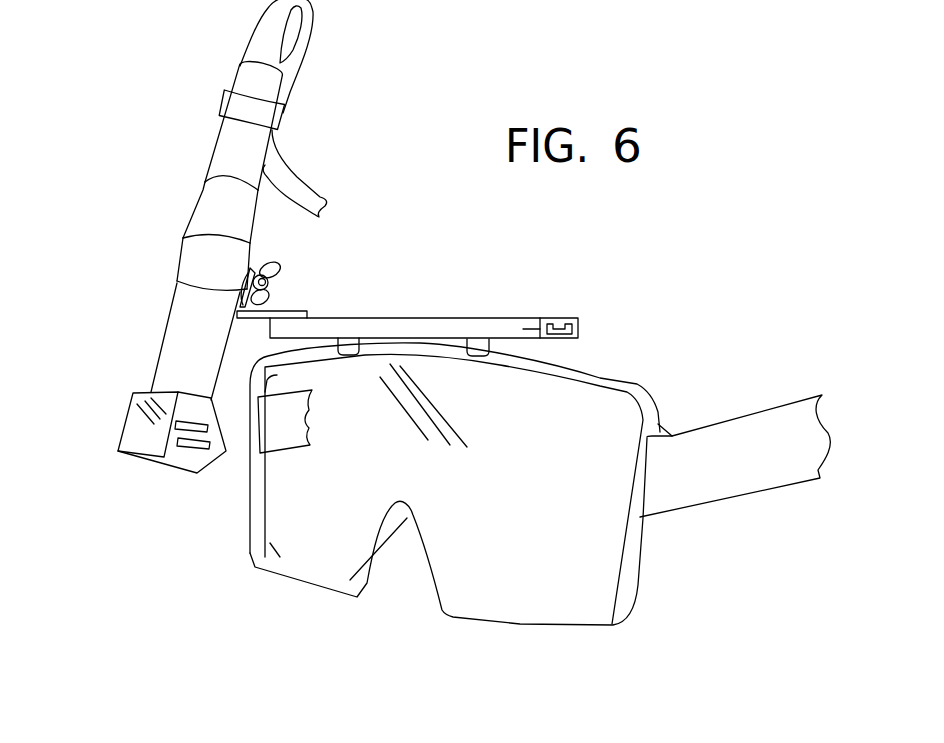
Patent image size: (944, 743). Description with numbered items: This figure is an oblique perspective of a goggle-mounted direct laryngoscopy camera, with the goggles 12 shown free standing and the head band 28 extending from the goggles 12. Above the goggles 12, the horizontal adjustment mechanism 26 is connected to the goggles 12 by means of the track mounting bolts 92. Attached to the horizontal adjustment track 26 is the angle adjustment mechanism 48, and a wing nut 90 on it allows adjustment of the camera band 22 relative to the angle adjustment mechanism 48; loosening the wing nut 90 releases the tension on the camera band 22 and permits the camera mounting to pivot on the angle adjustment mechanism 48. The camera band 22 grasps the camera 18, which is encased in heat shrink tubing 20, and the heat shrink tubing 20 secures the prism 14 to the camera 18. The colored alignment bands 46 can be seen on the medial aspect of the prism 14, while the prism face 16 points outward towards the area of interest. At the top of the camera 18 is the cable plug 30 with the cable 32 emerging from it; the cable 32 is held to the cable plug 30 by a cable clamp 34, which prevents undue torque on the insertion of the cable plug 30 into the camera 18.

The goggles 12 is at (283, 542).
The prism 14 is at (140, 458).
The prism face 16 is at (128, 437).
The camera 18 is at (183, 373).
The heat shrink tubing 20 is at (172, 313).
The camera band 22 is at (217, 253).
The horizontal adjustment mechanism 26 is at (578, 330).
The head band 28 is at (675, 485).
The cable plug 30 is at (235, 152).
The cable 32 is at (298, 58).
The cable clamp 34 is at (270, 115).
The colored alignment bands 46 is at (186, 442).
The angle adjustment mechanism 48 is at (275, 305).
The wing nut 90 is at (280, 268).
The track mounting bolts 92 is at (478, 348).